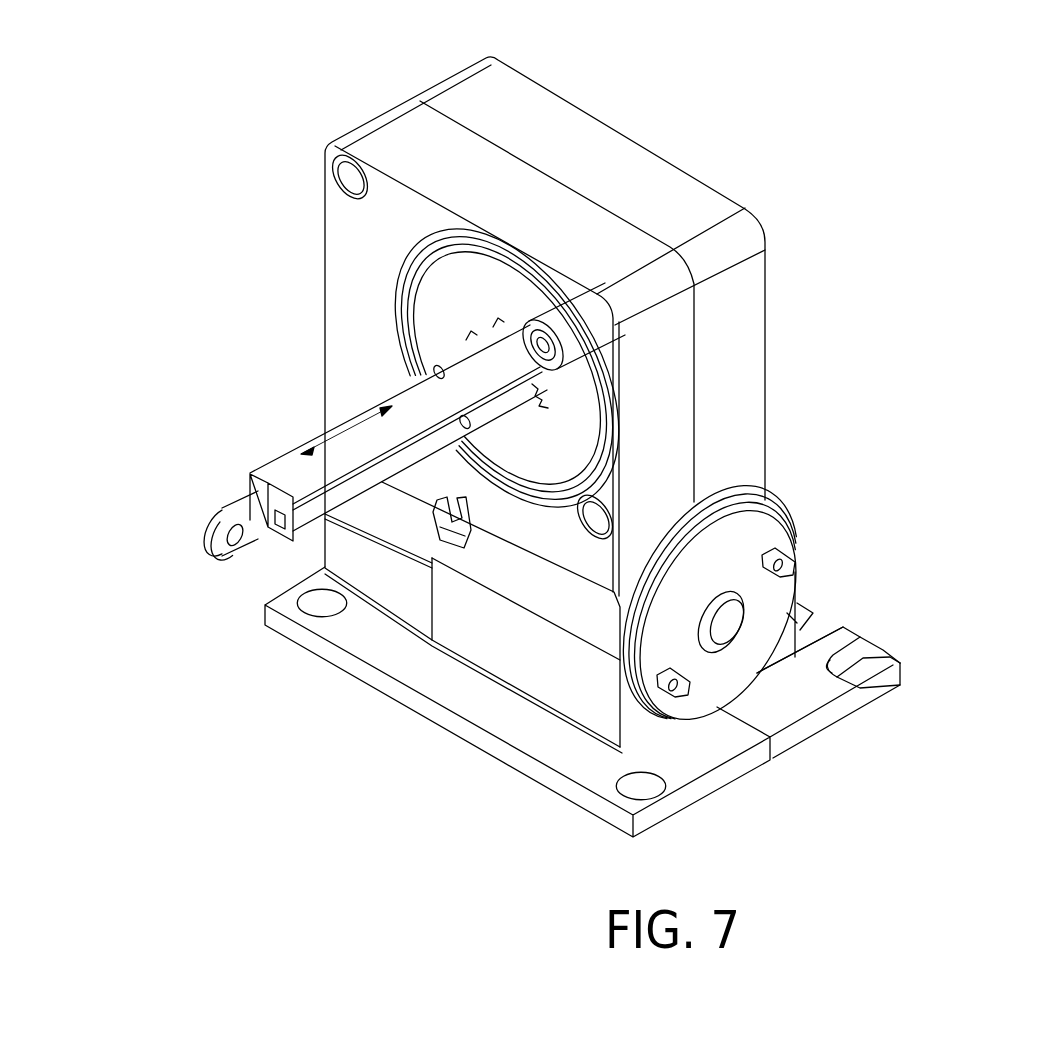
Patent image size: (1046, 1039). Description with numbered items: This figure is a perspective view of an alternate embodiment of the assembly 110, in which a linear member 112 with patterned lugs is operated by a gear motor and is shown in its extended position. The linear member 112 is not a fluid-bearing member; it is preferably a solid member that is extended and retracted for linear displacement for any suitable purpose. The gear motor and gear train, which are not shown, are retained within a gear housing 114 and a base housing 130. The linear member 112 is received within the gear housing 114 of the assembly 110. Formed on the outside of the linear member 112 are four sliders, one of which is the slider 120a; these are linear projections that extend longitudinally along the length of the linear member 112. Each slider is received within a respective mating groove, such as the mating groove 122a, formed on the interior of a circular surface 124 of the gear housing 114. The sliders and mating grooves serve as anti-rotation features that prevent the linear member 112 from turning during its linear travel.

The assembly 110 is at (160, 140).
The linear member 112 is at (274, 470).
The gear housing 114 is at (387, 123).
The slider 120a is at (362, 464).
The mating groove 122a is at (545, 394).
The circular surface 124 is at (468, 307).
The base housing 130 is at (514, 88).